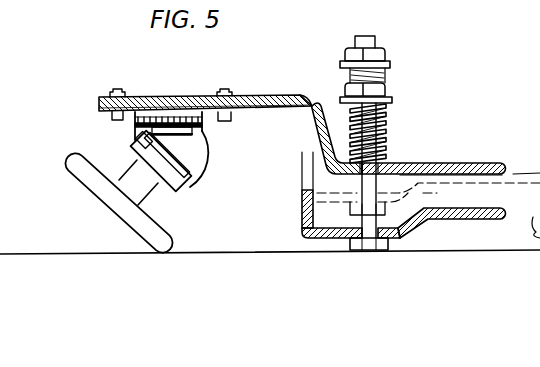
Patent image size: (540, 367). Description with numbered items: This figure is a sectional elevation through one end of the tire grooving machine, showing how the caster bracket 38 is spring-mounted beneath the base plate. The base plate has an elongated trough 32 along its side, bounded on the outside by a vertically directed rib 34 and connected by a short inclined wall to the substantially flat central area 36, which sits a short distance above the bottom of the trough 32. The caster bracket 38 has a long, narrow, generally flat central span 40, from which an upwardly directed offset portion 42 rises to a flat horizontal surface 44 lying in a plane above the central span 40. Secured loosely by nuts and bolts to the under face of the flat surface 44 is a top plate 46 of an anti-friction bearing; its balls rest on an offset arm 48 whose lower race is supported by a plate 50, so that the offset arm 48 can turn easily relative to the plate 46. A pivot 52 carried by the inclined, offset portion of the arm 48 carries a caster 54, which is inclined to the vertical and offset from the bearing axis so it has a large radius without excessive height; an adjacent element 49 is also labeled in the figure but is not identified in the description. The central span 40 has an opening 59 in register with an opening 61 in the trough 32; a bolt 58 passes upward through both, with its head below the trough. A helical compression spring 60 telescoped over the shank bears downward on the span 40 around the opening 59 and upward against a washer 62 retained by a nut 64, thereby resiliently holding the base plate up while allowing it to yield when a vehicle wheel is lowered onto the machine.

The troughs 32 is at (325, 240).
The ribs 34 is at (300, 197).
The central area 36 is at (470, 219).
The caster bracket 38 is at (478, 140).
The central span 40 is at (490, 162).
The upwardly directed offset portions 42 is at (308, 136).
The flat horizontal surfaces 44 is at (248, 97).
The top plates 46 is at (173, 111).
The offset arms 48 is at (137, 137).
The lever rod 49 is at (187, 190).
The plates 50 is at (185, 138).
The pivots 52 is at (178, 163).
The casters 54 is at (85, 180).
The bolts 58 is at (375, 250).
The opening 59 is at (388, 163).
The helical springs 60 is at (388, 125).
The openings 61 is at (347, 247).
The washers 62 is at (386, 91).
The nuts 64 is at (388, 56).